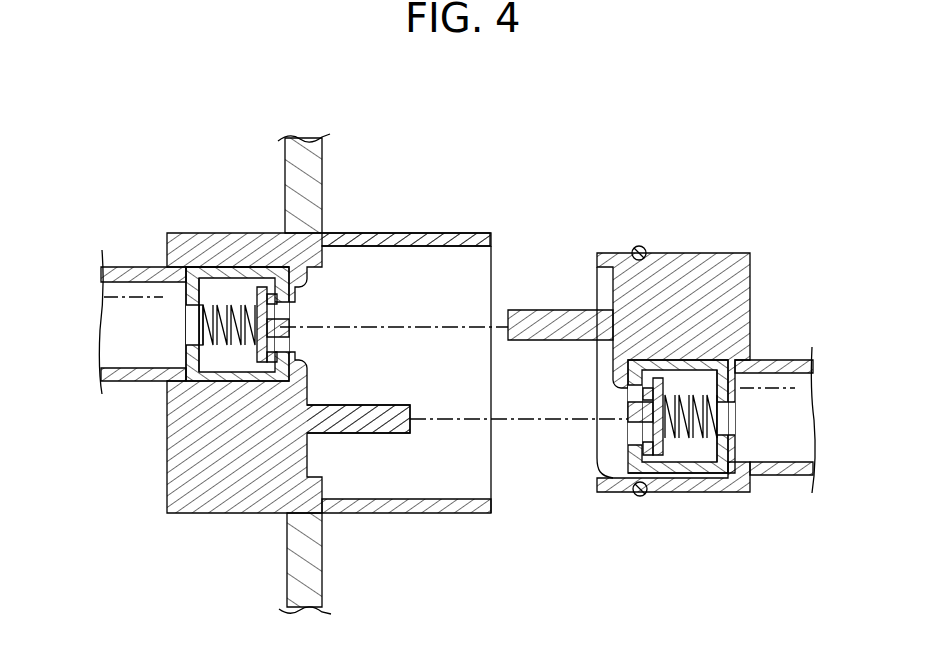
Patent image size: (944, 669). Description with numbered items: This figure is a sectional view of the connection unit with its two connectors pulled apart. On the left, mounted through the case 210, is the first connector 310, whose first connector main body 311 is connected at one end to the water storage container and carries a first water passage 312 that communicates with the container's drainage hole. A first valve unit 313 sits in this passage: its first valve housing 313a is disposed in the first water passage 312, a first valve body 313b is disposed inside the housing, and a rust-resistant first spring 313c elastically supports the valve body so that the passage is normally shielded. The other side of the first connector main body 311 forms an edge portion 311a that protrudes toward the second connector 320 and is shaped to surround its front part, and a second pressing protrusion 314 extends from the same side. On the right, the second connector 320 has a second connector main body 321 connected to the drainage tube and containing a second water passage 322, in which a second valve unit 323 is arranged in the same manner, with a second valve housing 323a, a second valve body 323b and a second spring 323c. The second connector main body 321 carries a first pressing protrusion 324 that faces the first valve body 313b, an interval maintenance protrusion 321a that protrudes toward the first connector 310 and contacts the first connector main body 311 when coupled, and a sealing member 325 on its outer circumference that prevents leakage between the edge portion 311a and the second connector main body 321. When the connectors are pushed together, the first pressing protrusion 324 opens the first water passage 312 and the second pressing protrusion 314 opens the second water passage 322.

The case 210 is at (292, 153).
The first connector 310 is at (334, 352).
The first connector main body 311 is at (176, 232).
The edge portion 311a is at (440, 249).
The first water passage 312 is at (135, 374).
The first valve unit 313 is at (190, 295).
The first valve housing 313a is at (187, 233).
The first valve body 313b is at (261, 286).
The first spring 313c is at (228, 300).
The second pressing protrusion 314 is at (372, 421).
The second connector 320 is at (701, 386).
The second connector main body 321 is at (702, 258).
The interval maintenance protrusion 321a is at (596, 462).
The second water passage 322 is at (793, 462).
The second valve unit 323 is at (712, 461).
The second valve housing 323a is at (726, 473).
The second valve body 323b is at (658, 456).
The second spring 323c is at (687, 439).
The first pressing protrusion 324 is at (542, 317).
The sealing member 325 is at (638, 246).